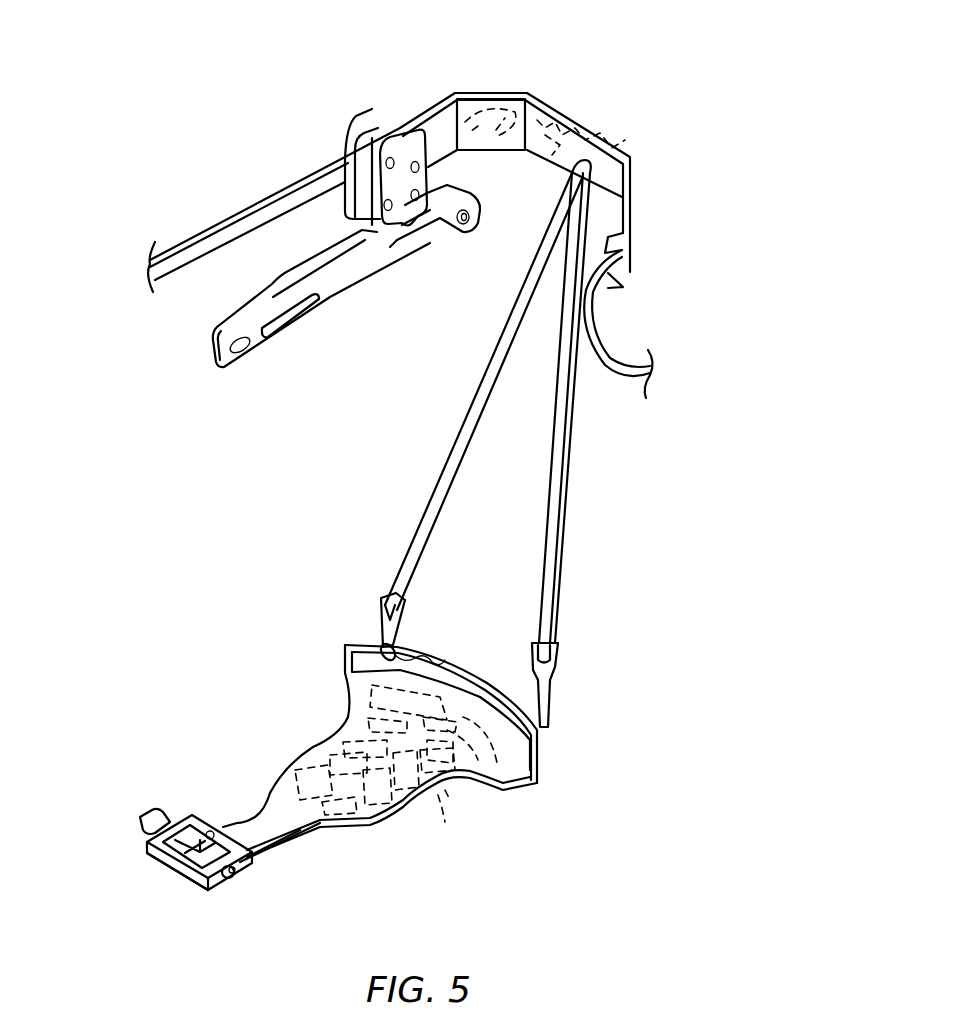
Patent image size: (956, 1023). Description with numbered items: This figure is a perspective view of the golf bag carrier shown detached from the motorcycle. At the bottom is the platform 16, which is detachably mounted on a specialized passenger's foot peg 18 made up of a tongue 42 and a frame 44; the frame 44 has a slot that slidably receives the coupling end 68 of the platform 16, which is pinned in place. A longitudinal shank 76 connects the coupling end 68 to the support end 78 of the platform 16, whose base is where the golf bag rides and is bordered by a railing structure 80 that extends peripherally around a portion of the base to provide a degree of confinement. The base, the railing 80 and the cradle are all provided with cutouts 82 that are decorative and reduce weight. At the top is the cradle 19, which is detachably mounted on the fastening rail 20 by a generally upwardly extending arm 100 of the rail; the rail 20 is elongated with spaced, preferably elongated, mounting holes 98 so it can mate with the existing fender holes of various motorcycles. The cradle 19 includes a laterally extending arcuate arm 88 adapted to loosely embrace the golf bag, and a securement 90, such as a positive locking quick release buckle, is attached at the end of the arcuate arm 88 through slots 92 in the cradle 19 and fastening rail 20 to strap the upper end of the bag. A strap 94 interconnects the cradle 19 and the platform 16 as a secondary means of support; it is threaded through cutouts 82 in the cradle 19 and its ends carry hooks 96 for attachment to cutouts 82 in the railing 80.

The platform 16 is at (370, 825).
The specialized passenger's foot peg 18 is at (163, 813).
The cradle 19 is at (568, 103).
The fastening rail 20 is at (266, 348).
The tongue 42 is at (145, 828).
The frame 44 is at (205, 880).
The coupling end 68 is at (250, 872).
The longitudinal shank 76 is at (283, 843).
The support end 78 is at (345, 690).
The railing structure 80 is at (420, 652).
The cutouts 82 is at (503, 150).
The arcuate arm 88 is at (503, 95).
The securement 90 is at (605, 340).
The slots 92 is at (345, 152).
The strap 94 is at (558, 548).
The hooks 96 is at (385, 620).
The mounting holes 98 is at (320, 320).
The upwardly extending arm 100 is at (350, 200).